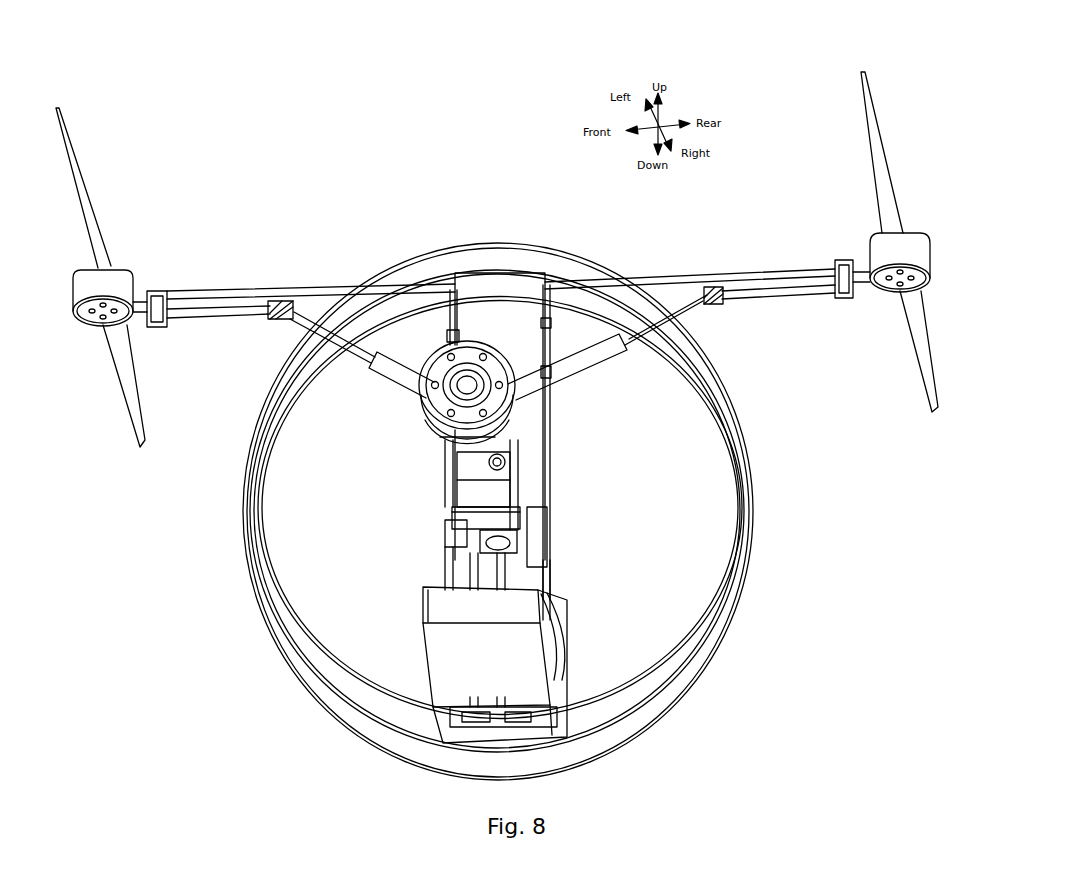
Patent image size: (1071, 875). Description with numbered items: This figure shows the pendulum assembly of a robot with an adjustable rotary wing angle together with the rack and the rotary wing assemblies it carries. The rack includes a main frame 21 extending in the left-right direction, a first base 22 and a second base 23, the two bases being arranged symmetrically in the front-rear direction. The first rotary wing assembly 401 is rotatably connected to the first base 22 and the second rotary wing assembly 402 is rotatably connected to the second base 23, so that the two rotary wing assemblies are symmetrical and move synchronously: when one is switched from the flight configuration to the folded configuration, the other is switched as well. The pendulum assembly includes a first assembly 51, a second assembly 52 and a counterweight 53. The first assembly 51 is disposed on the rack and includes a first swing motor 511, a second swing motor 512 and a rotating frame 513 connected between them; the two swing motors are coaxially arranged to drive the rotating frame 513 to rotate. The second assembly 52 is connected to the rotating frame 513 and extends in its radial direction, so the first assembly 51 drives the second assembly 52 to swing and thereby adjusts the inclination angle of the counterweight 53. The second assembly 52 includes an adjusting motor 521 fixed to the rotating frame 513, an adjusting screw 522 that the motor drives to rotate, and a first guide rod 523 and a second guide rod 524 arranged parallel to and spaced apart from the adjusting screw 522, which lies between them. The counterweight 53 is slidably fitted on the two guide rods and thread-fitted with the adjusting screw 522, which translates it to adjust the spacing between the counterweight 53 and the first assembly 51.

The first rotary wing assembly 401 is at (303, 298).
The second rotary wing assembly 402 is at (772, 270).
The second base 23 is at (548, 461).
The main frame 21 is at (535, 484).
The first base 22 is at (455, 551).
The first assembly 51 is at (165, 480).
The second swing motor 512 is at (458, 501).
The rotating frame 513 is at (460, 521).
The first swing motor 511 is at (452, 530).
The second assembly 52 is at (825, 483).
The adjusting motor 521 is at (522, 520).
The second guide rod 524 is at (528, 545).
The first guide rod 523 is at (503, 574).
The adjusting screw 522 is at (548, 583).
The counterweight 53 is at (450, 658).